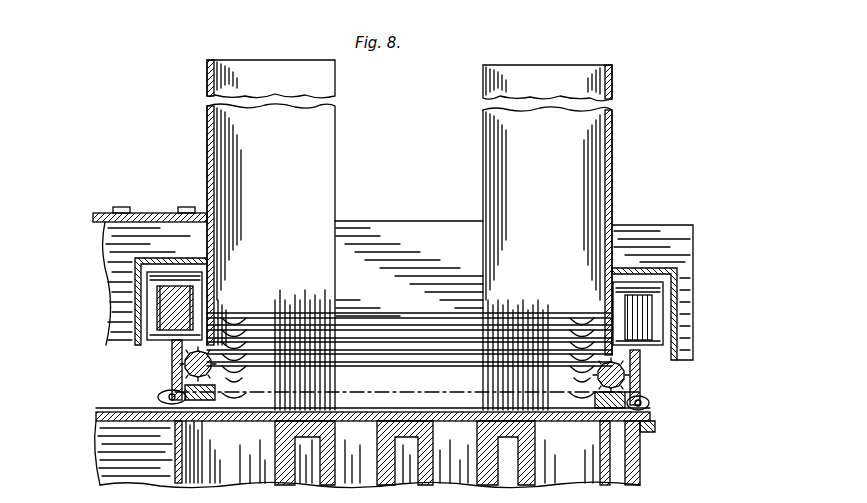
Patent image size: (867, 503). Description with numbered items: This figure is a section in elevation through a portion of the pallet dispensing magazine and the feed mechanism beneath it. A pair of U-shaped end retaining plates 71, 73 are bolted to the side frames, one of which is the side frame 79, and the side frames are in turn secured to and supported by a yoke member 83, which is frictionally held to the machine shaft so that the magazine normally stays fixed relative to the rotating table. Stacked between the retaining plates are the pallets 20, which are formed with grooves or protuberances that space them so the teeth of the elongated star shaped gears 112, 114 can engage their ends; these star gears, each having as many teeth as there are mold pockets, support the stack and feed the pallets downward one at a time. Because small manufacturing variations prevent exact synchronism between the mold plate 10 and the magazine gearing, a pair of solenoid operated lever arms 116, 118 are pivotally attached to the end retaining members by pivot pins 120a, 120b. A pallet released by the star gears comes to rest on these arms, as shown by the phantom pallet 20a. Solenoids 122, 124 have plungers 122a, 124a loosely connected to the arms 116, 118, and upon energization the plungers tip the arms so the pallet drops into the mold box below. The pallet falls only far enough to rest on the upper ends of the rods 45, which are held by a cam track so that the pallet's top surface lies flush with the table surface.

The U-shaped end retaining plate 71 is at (207, 78).
The U-shaped end retaining plate 73 is at (612, 118).
The yoke member 83 is at (103, 213).
The side frame 79 is at (670, 225).
The solenoid 122 is at (178, 300).
The solenoid 124 is at (655, 318).
The pallet 20 is at (400, 313).
The phantom pallet 20a is at (342, 393).
The pivot pin 120a is at (236, 379).
The pivot pin 120b is at (566, 380).
The plunger 122a is at (172, 362).
The plunger 124a is at (641, 372).
The star shaped gear 114 is at (186, 364).
The star shaped gear 112 is at (625, 380).
The solenoid operated lever arm 116 is at (158, 398).
The solenoid operated lever arm 118 is at (649, 404).
The mold plate 10 is at (100, 408).
The rod 45 is at (258, 445).